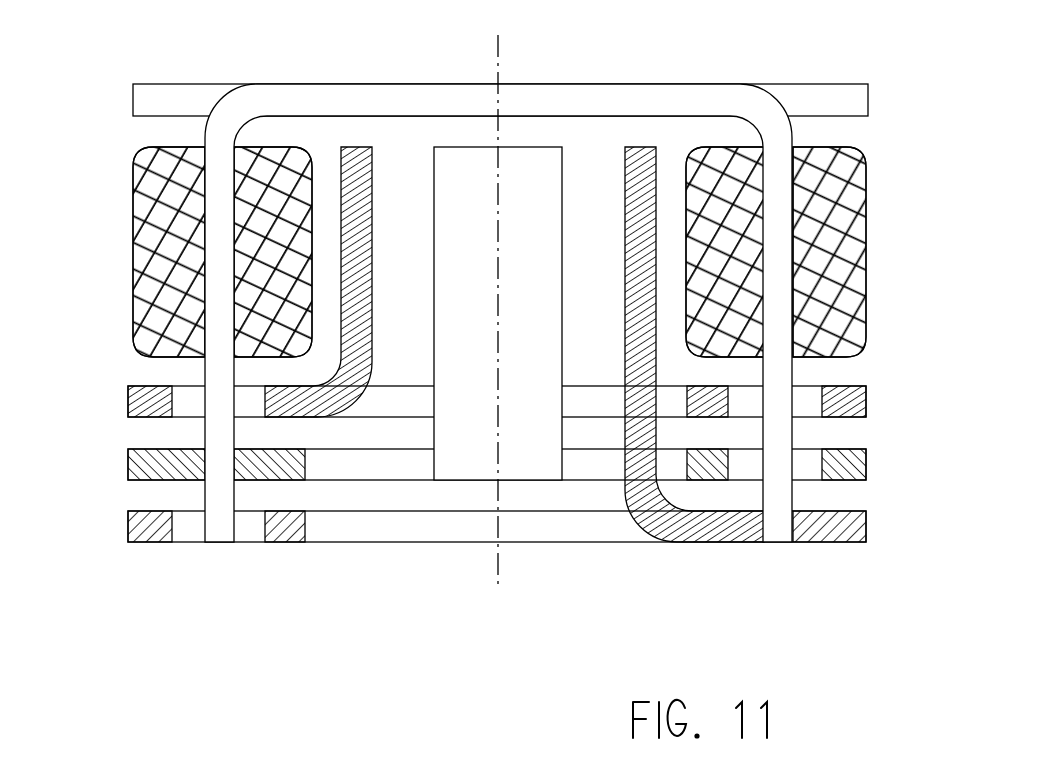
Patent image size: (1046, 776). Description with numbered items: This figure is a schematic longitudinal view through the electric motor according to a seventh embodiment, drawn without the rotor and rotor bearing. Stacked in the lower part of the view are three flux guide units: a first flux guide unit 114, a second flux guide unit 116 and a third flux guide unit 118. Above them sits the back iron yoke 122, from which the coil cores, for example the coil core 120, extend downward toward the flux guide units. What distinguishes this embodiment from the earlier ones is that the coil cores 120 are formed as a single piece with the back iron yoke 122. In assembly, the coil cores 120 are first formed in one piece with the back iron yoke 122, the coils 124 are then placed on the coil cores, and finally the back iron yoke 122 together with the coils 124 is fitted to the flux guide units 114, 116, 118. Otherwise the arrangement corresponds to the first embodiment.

The first flux guide unit 114 is at (870, 524).
The second flux guide unit 116 is at (870, 462).
The third flux guide unit 118 is at (872, 404).
The coil core 120 is at (772, 527).
The back iron yoke 122 is at (587, 98).
The coil 124 is at (152, 226).